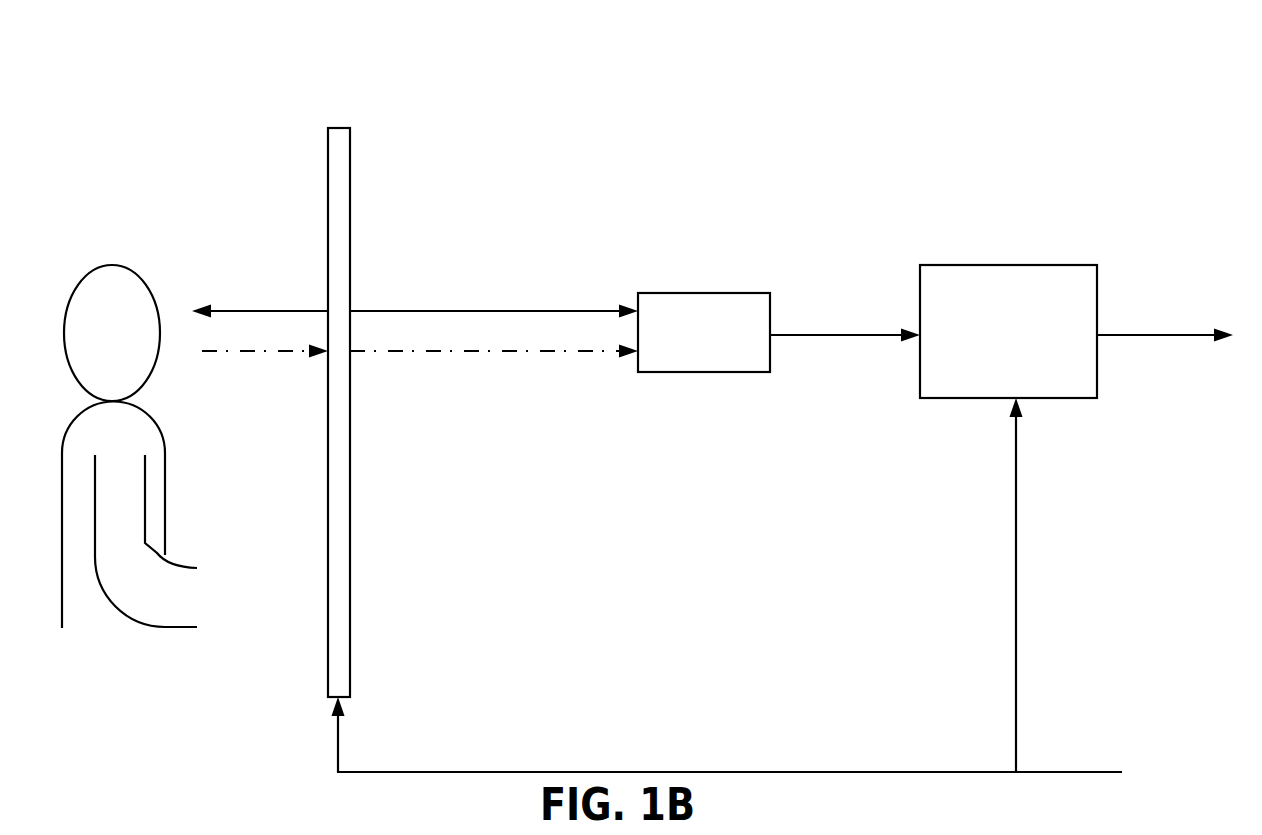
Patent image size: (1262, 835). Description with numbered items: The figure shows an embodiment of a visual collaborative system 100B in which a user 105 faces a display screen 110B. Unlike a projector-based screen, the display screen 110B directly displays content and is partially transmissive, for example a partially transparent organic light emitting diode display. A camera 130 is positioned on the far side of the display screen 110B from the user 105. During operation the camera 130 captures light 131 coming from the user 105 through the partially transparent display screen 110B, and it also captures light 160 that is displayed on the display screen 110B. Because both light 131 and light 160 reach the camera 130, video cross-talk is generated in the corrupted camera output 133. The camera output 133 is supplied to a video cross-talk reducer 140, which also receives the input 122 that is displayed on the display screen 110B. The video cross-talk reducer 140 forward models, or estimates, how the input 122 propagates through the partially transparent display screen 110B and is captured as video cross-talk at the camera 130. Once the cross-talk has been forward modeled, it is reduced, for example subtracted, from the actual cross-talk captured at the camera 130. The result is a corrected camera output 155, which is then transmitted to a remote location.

The visual collaborative system 100B is at (102, 54).
The user 105 is at (112, 265).
The display screen 110B is at (340, 128).
The light 160 is at (297, 311).
The light 131 is at (227, 351).
The camera 130 is at (690, 372).
The camera output 133 is at (822, 317).
The video cross-talk reducer 140 is at (1027, 369).
The corrected camera output 155 is at (1138, 317).
The input 122 is at (1173, 782).